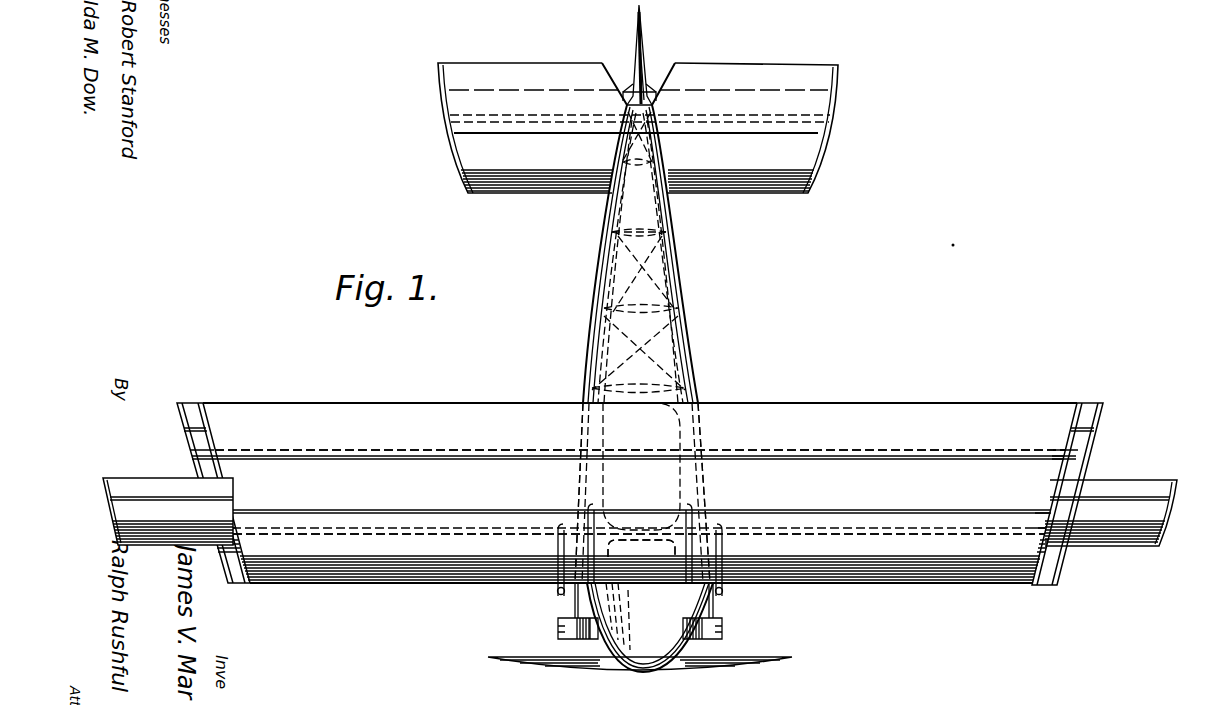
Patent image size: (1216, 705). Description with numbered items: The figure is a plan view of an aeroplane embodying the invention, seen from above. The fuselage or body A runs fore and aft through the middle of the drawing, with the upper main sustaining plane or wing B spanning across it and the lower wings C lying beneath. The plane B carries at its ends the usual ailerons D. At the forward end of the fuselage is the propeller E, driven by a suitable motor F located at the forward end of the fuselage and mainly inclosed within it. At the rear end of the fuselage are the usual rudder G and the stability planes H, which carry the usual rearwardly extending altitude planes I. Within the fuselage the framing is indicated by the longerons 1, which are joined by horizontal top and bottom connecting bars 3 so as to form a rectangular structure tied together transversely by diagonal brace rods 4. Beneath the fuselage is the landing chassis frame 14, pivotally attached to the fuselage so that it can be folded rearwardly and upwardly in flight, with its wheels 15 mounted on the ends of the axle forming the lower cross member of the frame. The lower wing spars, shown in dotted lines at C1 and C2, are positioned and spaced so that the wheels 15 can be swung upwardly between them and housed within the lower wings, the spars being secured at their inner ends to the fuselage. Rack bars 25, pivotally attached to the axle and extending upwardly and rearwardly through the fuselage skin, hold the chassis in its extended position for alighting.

The fuselage A is at (596, 322).
The upper main sustaining plane B is at (640, 493).
The lower wings C is at (196, 441).
The wing spar C1 is at (355, 535).
The wing spar C2 is at (313, 450).
The ailerons D is at (640, 512).
The propeller E is at (583, 670).
The motor F is at (558, 632).
The rudder G is at (640, 52).
The stability planes H is at (636, 148).
The altitude planes I is at (638, 128).
The longerons 1 is at (596, 429).
The horizontal connecting bars 3 is at (641, 312).
The diagonal brace rods 4 is at (685, 268).
The chassis frame 14 is at (647, 530).
The wheels 15 is at (560, 539).
The rack bars 25 is at (584, 506).